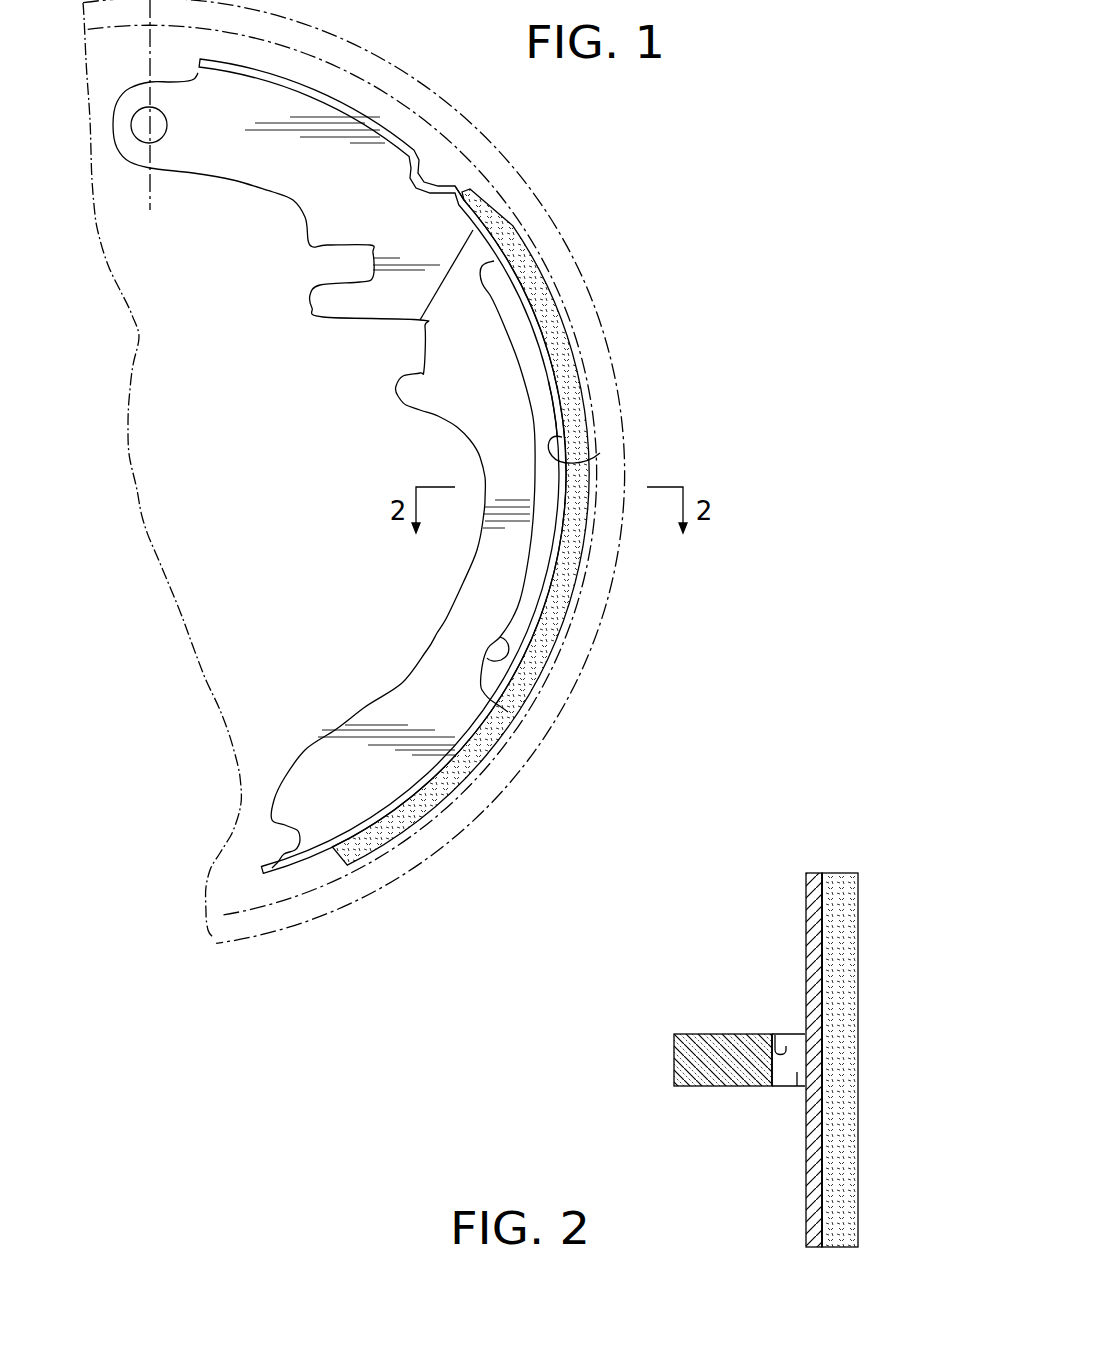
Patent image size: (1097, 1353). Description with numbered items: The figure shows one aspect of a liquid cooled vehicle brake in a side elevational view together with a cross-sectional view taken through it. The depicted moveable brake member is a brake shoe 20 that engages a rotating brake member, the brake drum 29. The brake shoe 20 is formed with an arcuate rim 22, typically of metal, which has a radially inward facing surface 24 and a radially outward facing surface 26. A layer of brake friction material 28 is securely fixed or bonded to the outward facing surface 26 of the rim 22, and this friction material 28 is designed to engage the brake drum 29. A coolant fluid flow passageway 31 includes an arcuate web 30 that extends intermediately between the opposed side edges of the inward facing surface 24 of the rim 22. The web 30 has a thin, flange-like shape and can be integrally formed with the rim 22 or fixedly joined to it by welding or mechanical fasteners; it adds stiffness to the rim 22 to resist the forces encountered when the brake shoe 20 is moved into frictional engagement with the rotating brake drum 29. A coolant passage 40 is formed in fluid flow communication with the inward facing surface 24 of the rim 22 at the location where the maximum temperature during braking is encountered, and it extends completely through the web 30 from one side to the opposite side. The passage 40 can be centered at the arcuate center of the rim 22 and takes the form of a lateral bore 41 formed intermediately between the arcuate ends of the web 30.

In FIG. 1, the brake shoe 20 is at (256, 228).
In FIG. 1, the arcuate rim 22 is at (430, 437).
In FIG. 2, the arcuate rim 22 is at (827, 1027).
In FIG. 1, the radially inward facing surface 24 is at (420, 323).
In FIG. 2, the radially inward facing surface 24 is at (806, 1205).
In FIG. 1, the radially outward facing surface 26 is at (375, 116).
In FIG. 2, the radially outward facing surface 26 is at (823, 1068).
In FIG. 1, the brake friction material 28 is at (578, 593).
In FIG. 2, the brake friction material 28 is at (838, 1015).
In FIG. 1, the brake drum 29 is at (570, 673).
In FIG. 1, the arcuate web 30 is at (425, 728).
In FIG. 2, the arcuate web 30 is at (700, 1026).
In FIG. 1, the coolant fluid flow passageway 31 is at (540, 402).
In FIG. 2, the coolant fluid flow passageway 31 is at (790, 1050).
In FIG. 1, the coolant passage 40 is at (590, 462).
In FIG. 2, the coolant passage 40 is at (797, 1075).
In FIG. 1, the lateral bore 41 is at (487, 657).
In FIG. 2, the lateral bore 41 is at (774, 1040).